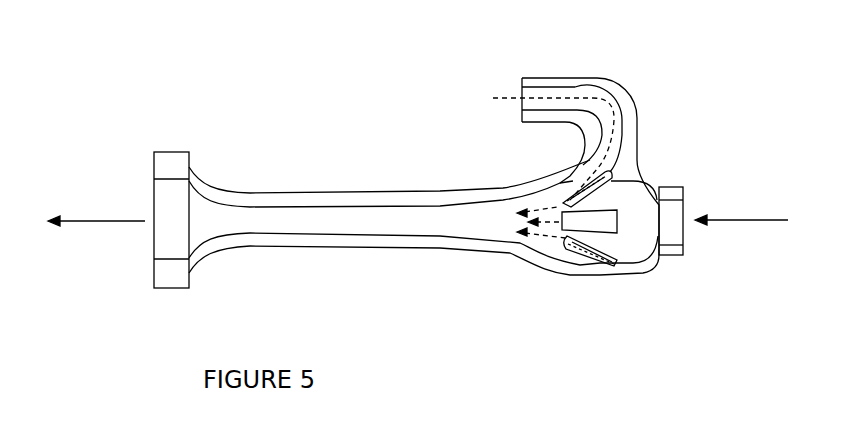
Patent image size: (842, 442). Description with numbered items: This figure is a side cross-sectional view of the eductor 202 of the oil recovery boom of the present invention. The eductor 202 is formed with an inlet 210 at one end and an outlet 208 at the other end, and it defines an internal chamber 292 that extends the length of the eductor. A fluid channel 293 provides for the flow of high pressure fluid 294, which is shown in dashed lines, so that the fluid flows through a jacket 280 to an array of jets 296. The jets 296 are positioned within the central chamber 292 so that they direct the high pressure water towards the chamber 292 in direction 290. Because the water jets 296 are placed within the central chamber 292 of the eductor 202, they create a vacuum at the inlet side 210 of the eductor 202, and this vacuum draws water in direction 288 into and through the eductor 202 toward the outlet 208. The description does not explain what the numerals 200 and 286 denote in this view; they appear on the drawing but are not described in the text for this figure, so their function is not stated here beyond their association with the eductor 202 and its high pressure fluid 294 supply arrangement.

The fluid delivery device 200 is at (840, 17).
The eductor 202 is at (400, 247).
The outlet 208 is at (167, 220).
The inlet 210 is at (672, 222).
The jacket 280 is at (638, 100).
The fluid source 286 is at (437, 0).
The direction of drawn water 288 is at (748, 220).
The direction of jet flow 290 is at (97, 220).
The internal chamber 292 is at (463, 223).
The fluid channel 293 is at (582, 92).
The high pressure fluid 294 is at (505, 100).
The jets 296 is at (570, 193).